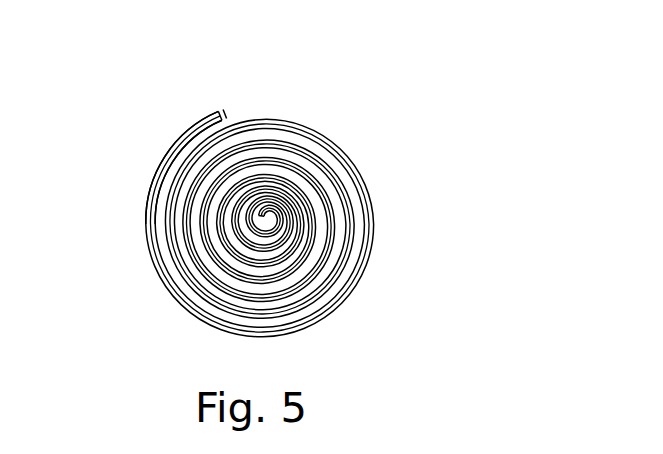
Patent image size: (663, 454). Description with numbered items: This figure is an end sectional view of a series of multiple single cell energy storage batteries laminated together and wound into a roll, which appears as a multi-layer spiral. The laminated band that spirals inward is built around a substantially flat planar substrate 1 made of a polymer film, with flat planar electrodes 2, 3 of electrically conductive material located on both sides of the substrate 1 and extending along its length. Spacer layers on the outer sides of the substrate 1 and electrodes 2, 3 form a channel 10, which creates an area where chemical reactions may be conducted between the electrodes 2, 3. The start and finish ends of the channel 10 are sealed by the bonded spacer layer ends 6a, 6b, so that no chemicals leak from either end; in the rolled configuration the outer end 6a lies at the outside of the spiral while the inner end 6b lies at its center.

The substrate 1 is at (196, 122).
The electrode 2 is at (129, 167).
The electrode 3 is at (181, 140).
The spacer layer end 6a is at (229, 120).
The spacer layer end 6b is at (266, 206).
The channel 10 is at (157, 224).